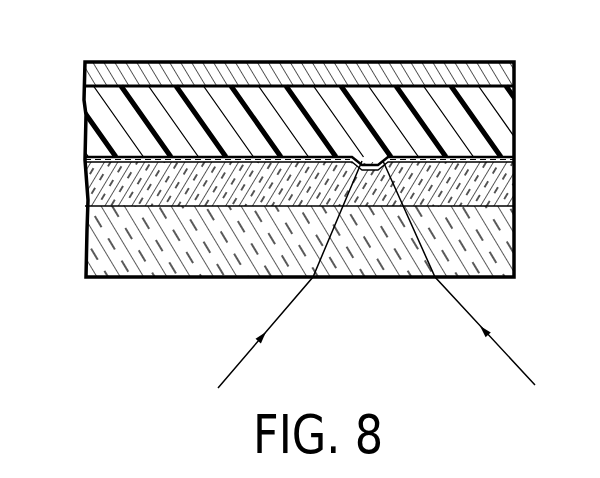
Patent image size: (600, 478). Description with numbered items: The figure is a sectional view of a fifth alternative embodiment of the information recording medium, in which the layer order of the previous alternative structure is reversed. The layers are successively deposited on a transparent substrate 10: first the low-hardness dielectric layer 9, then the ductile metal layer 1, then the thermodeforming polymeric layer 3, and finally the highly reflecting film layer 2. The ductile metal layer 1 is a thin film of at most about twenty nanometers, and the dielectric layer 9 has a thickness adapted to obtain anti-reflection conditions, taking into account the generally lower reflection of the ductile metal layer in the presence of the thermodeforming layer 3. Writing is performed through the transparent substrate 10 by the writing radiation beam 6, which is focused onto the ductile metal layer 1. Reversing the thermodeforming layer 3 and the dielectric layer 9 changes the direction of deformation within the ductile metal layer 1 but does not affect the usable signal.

The ductile metal film 1 is at (515, 146).
The reflecting film layer 2 is at (442, 62).
The thermodeforming layer 3 is at (515, 110).
The writing radiation beam 6 is at (292, 304).
The dielectric layer 9 is at (503, 184).
The substrate 10 is at (503, 240).